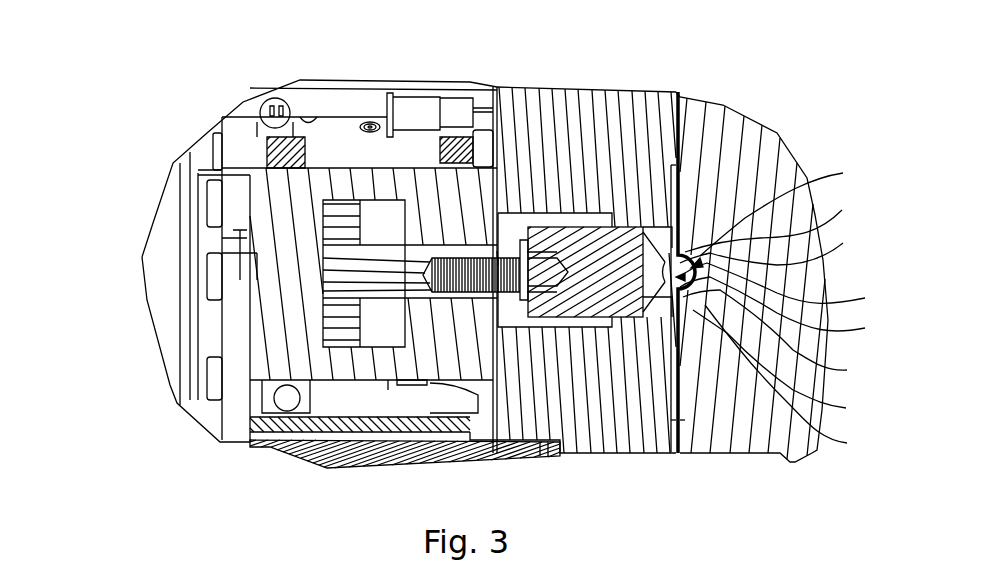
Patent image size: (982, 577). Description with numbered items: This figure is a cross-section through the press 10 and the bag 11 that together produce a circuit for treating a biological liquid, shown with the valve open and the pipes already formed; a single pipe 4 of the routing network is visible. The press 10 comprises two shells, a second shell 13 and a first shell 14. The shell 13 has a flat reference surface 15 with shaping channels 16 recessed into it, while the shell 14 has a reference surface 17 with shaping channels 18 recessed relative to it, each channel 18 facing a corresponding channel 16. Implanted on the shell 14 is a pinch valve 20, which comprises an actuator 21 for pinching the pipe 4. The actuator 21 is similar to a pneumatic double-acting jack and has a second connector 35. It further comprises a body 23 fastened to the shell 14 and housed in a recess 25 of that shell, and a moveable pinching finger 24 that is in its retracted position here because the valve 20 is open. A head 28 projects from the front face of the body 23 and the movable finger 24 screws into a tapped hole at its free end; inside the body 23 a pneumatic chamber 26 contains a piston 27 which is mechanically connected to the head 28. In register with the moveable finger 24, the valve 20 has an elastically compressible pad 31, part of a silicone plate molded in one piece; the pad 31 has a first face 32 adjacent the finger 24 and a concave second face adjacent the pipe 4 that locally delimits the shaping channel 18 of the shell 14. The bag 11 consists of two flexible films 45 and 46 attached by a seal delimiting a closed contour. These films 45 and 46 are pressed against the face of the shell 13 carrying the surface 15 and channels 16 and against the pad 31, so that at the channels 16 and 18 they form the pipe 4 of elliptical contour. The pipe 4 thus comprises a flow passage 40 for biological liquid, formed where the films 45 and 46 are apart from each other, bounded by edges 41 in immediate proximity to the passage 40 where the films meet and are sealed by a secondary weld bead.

The press 10 is at (210, 93).
The bag 11 is at (680, 95).
The second shell 13 is at (762, 133).
The first shell 14 is at (632, 97).
The reference surface 15 is at (687, 420).
The shaping channels 16 is at (782, 365).
The reference surface 17 is at (669, 420).
The shaping channels 18 is at (785, 307).
The pinch valve 20 is at (248, 166).
The actuator 21 is at (467, 352).
The body 23 is at (484, 170).
The moveable pinching finger 24 is at (623, 318).
The recess 25 is at (233, 320).
The pneumatic chamber 26 is at (373, 216).
The piston 27 is at (330, 343).
The head 28 is at (468, 282).
The elastically compressible pad 31 is at (655, 320).
The first face 32 is at (650, 235).
The second connector 35 is at (417, 107).
The flow passage 40 is at (785, 285).
The edges 41 is at (786, 307).
The flexible film 45 is at (774, 245).
The flexible film 46 is at (774, 224).
The pipe 4 is at (773, 334).